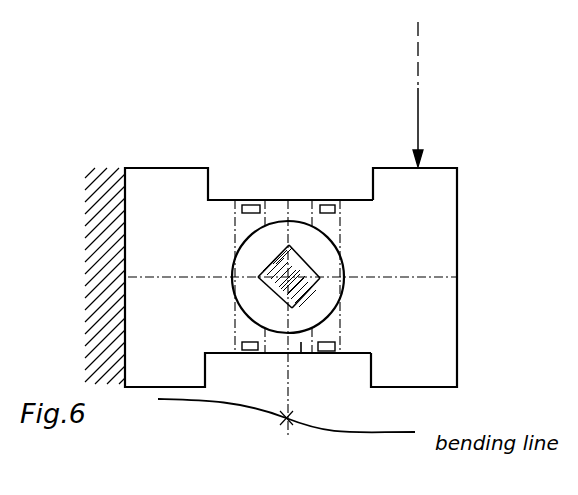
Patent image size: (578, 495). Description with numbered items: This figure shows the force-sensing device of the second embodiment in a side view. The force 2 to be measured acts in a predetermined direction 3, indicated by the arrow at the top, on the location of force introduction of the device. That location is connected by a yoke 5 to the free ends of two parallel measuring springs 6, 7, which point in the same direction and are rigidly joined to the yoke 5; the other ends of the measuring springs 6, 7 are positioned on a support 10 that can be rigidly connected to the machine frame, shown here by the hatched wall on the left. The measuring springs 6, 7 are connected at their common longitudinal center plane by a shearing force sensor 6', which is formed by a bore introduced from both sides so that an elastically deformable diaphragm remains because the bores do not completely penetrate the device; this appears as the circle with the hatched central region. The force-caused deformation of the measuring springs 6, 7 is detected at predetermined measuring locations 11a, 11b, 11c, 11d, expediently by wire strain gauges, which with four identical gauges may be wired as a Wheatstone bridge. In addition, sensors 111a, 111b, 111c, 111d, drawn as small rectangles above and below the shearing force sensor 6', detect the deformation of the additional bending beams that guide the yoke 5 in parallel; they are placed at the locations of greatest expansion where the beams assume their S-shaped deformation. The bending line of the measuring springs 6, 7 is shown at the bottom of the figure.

The force 2 is at (418, 107).
The predetermined direction 3 is at (419, 33).
The yoke 5 is at (440, 338).
The measuring spring 6 is at (288, 241).
The shearing force sensor 6' is at (296, 227).
The measuring spring 7 is at (302, 353).
The support 10 is at (175, 182).
The measuring location 11a is at (306, 259).
The measuring location 11b is at (306, 296).
The measuring location 11c is at (272, 292).
The measuring location 11d is at (274, 263).
The sensor 111a is at (316, 233).
The sensor 111b is at (327, 352).
The sensor 111c is at (249, 352).
The sensor 111d is at (246, 205).